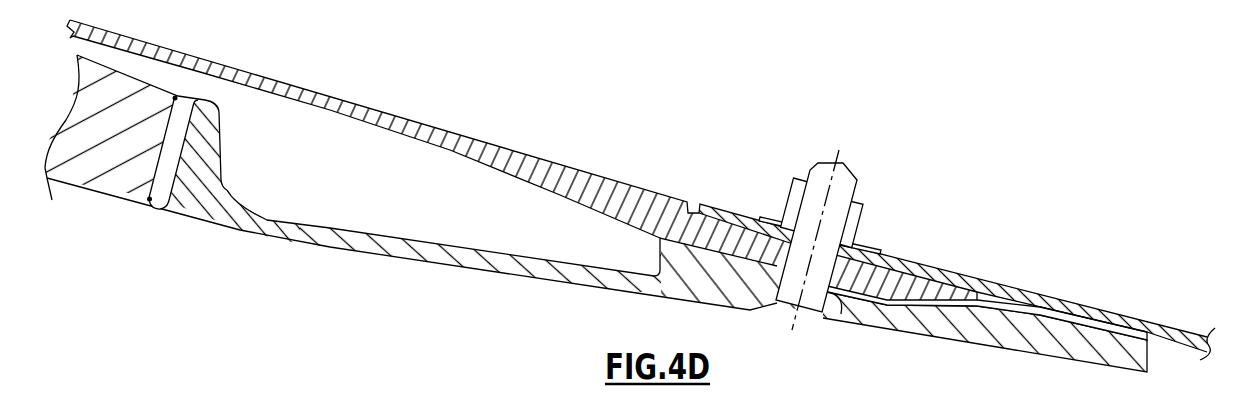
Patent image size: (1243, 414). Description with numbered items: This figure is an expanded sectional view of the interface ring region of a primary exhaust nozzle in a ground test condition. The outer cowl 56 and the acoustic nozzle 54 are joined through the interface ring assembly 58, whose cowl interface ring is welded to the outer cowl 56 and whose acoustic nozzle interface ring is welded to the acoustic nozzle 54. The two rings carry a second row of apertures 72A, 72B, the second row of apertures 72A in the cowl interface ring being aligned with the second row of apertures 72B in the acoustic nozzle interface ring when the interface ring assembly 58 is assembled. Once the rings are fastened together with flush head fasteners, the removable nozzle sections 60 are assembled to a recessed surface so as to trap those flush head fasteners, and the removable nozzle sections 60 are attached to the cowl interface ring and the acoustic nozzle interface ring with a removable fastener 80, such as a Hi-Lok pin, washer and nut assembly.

The acoustic nozzle 54 is at (105, 188).
The outer cowl 56 is at (415, 120).
The interface ring assembly 58 is at (968, 245).
The removable nozzle sections 60 is at (1048, 293).
The second row of apertures 72A is at (872, 262).
The second row of apertures 72B is at (833, 307).
The removable fastener 80 is at (868, 187).